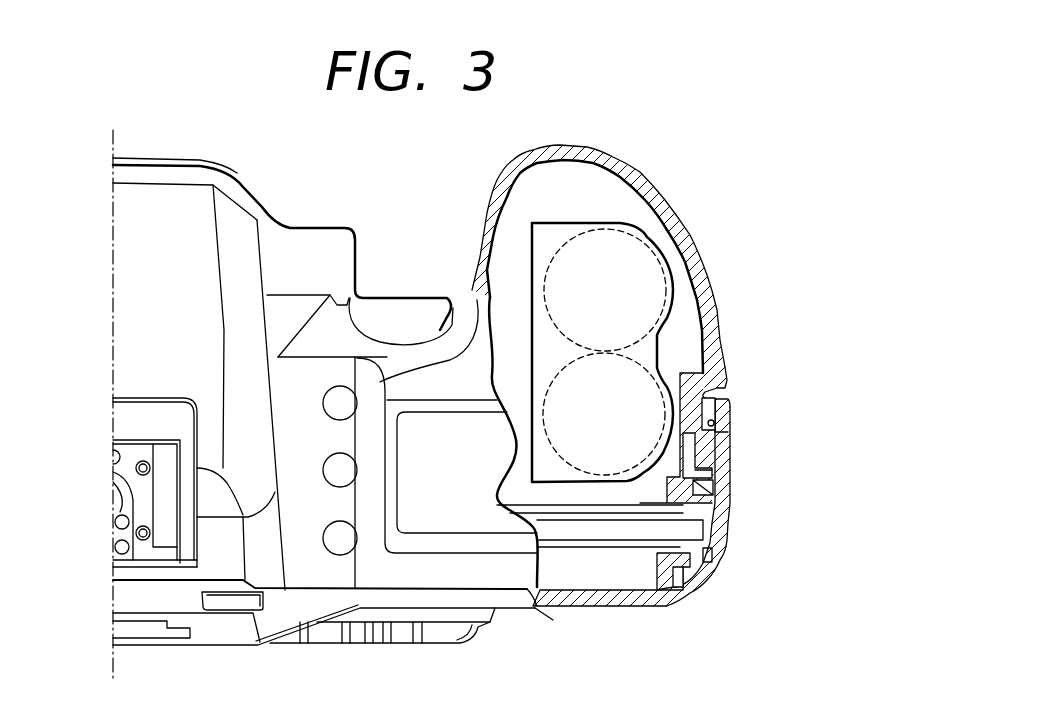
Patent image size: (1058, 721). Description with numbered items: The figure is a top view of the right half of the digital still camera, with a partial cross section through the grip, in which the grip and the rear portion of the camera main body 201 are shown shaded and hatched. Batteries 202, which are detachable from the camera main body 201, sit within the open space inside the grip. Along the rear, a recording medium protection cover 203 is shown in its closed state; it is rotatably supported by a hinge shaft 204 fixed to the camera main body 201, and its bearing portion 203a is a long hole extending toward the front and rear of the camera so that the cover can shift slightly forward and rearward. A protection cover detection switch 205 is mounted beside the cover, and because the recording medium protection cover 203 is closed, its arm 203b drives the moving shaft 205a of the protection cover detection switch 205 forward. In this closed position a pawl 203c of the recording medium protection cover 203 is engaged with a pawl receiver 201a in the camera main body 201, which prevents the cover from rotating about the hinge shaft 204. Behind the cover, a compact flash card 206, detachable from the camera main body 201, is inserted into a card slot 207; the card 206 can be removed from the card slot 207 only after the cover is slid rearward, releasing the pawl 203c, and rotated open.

The camera main body 201 is at (465, 302).
The pawl receiver 201a is at (713, 580).
The batteries 202 is at (647, 268).
The recording medium protection cover 203 is at (730, 400).
The bearing portion 203a is at (718, 412).
The arm 203b is at (700, 530).
The pawl 203c is at (680, 610).
The hinge shaft 204 is at (715, 423).
The protection cover detection switch 205 is at (693, 450).
The moving shaft 205a is at (718, 482).
The compact flash card 206 is at (713, 557).
The card slot 207 is at (598, 547).